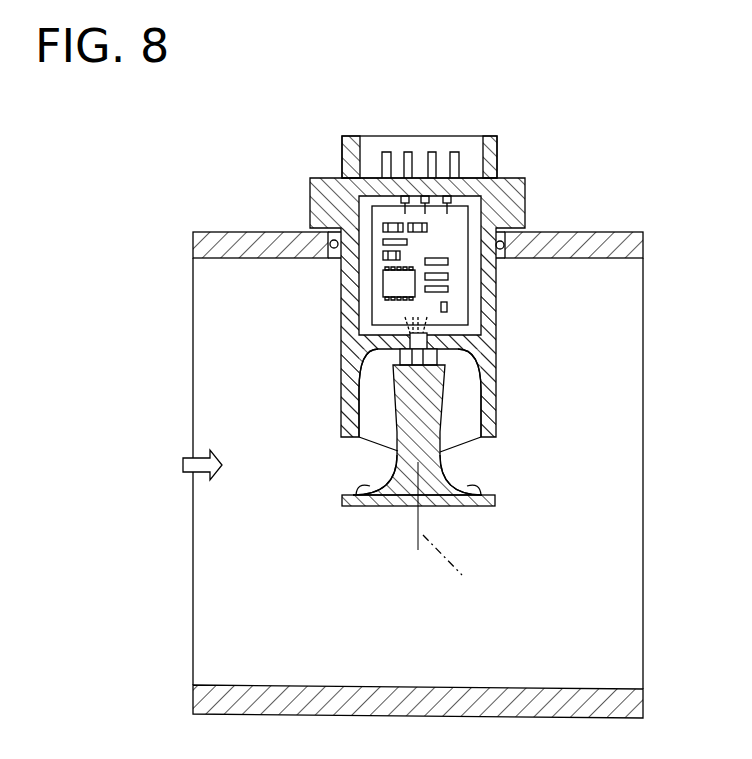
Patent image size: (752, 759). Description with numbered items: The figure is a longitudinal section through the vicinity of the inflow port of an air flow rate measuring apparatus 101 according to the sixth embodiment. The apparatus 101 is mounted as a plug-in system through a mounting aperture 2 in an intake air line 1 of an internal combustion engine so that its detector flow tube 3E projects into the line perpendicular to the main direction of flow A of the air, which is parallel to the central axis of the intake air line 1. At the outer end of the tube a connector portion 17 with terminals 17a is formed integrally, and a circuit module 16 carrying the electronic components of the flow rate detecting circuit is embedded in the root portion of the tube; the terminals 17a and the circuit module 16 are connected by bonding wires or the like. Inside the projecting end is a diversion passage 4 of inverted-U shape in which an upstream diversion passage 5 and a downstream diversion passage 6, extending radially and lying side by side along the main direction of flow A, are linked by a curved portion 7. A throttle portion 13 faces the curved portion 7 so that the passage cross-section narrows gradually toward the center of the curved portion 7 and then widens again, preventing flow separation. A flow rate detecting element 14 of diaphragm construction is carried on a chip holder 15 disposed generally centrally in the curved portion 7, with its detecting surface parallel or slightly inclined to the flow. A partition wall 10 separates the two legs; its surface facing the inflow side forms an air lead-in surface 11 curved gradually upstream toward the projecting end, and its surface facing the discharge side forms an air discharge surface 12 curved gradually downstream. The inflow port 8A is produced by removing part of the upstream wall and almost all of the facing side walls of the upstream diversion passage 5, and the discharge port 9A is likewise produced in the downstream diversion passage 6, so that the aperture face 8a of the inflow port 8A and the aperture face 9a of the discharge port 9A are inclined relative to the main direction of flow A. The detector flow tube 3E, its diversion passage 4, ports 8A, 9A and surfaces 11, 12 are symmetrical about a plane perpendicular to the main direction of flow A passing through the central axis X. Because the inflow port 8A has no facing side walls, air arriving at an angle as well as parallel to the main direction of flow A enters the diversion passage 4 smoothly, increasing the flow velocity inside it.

The intake air line 1 is at (613, 232).
The air flow rate measuring apparatus 101 is at (298, 182).
The mounting aperture 2 is at (312, 213).
The detector flow tube 3E is at (338, 285).
The curved portion 7 is at (362, 342).
The connector portion 17 is at (499, 151).
The terminals 17a is at (383, 162).
The circuit module 16 is at (460, 225).
The flow rate detecting element 14 is at (428, 347).
The chip holder 15 is at (432, 361).
The throttle portion 13 is at (399, 357).
The diversion passage 4 is at (373, 412).
The central axis X is at (449, 538).
The partition wall 10 is at (382, 507).
The air lead-in surface 11 is at (350, 506).
The air discharge surface 12 is at (482, 507).
The upstream diversion passage 5 is at (368, 388).
The downstream diversion passage 6 is at (470, 392).
The aperture face of the inflow port 8a is at (360, 442).
The aperture face of the outflow port 9a is at (473, 448).
The inflow port 8A is at (345, 472).
The discharge port 9A is at (482, 472).
The main direction of flow A is at (187, 465).